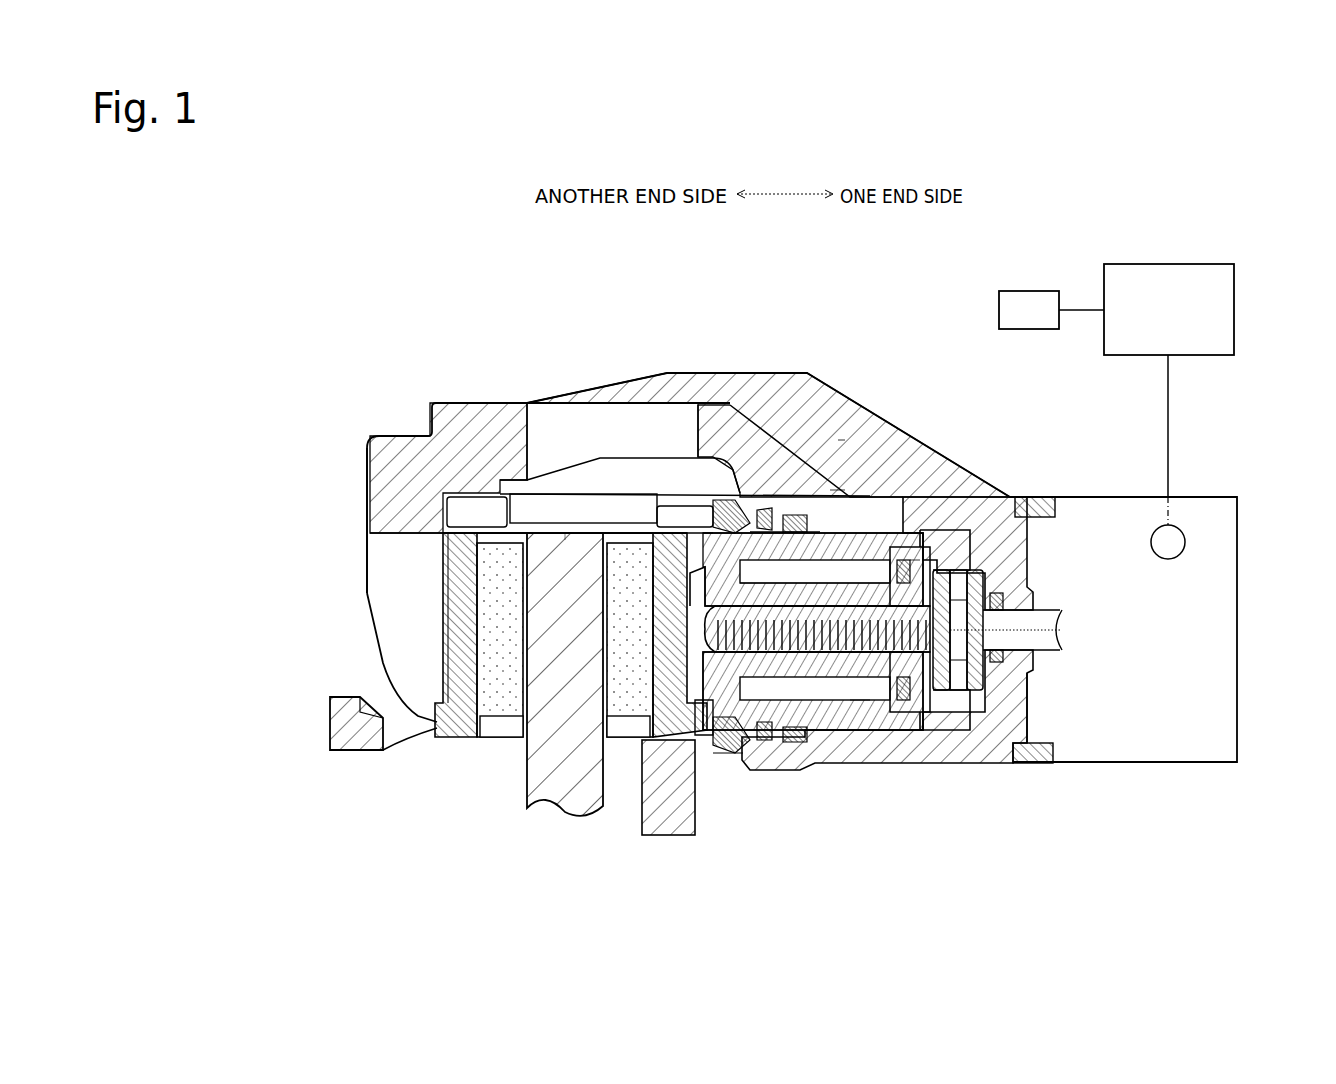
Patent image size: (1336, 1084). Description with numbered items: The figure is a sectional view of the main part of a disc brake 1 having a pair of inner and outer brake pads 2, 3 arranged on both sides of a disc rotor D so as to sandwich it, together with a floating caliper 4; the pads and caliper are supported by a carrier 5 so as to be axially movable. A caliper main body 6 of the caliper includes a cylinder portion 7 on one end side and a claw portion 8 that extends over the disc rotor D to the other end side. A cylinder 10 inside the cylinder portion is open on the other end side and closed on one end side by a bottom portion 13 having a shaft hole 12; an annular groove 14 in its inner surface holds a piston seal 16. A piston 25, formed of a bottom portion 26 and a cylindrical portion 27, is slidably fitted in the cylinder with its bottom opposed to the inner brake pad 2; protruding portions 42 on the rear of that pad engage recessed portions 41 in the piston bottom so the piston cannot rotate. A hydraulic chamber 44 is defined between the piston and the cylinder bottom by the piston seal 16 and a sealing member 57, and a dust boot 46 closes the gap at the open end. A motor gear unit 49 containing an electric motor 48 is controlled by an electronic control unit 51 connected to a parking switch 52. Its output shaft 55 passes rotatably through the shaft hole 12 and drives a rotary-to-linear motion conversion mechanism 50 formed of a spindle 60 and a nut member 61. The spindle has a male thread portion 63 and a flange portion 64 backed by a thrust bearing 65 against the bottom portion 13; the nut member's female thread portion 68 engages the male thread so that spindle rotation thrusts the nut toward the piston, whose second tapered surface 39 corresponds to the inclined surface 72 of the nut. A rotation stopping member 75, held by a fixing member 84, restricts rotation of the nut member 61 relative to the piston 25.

The disc brake 1 is at (1250, 262).
The inner brake pad 2 is at (625, 707).
The outer brake pad 3 is at (500, 698).
The floating caliper 4 is at (551, 352).
The carrier 5 is at (352, 758).
The caliper main body 6 is at (838, 497).
The cylinder portion 7 is at (870, 735).
The claw portion 8 is at (383, 598).
The cylinder 10 is at (840, 717).
The shaft hole 12 is at (1040, 732).
The bottom portion 13 is at (1000, 700).
The annular groove 14 is at (755, 520).
The piston seal 16 is at (790, 540).
The piston 25 is at (825, 520).
The bottom portion 26 is at (615, 545).
The cylindrical portion 27 is at (823, 573).
The second tapered surface 39 is at (640, 540).
The recessed portions 41 is at (717, 735).
The protruding portions 42 is at (703, 730).
The hydraulic chamber 44 is at (960, 722).
The dust boot 46 is at (704, 470).
The electric motor 48 is at (1180, 528).
The motor gear unit 49 is at (1242, 576).
The rotary-to-linear motion conversion mechanism 50 is at (843, 455).
The electronic control unit 51 is at (1170, 290).
The parking switch 52 is at (1028, 305).
The output shaft 55 is at (1050, 625).
The sealing member 57 is at (1000, 560).
The spindle 60 is at (758, 755).
The nut member 61 is at (995, 592).
The male thread portion 63 is at (880, 695).
The flange portion 64 is at (917, 705).
The thrust bearing 65 is at (975, 692).
The female thread portion 68 is at (855, 720).
The inclined surface 72 is at (668, 520).
The rotation stopping member 75 is at (880, 540).
The fixing member 84 is at (905, 560).
The disc rotor D is at (566, 783).